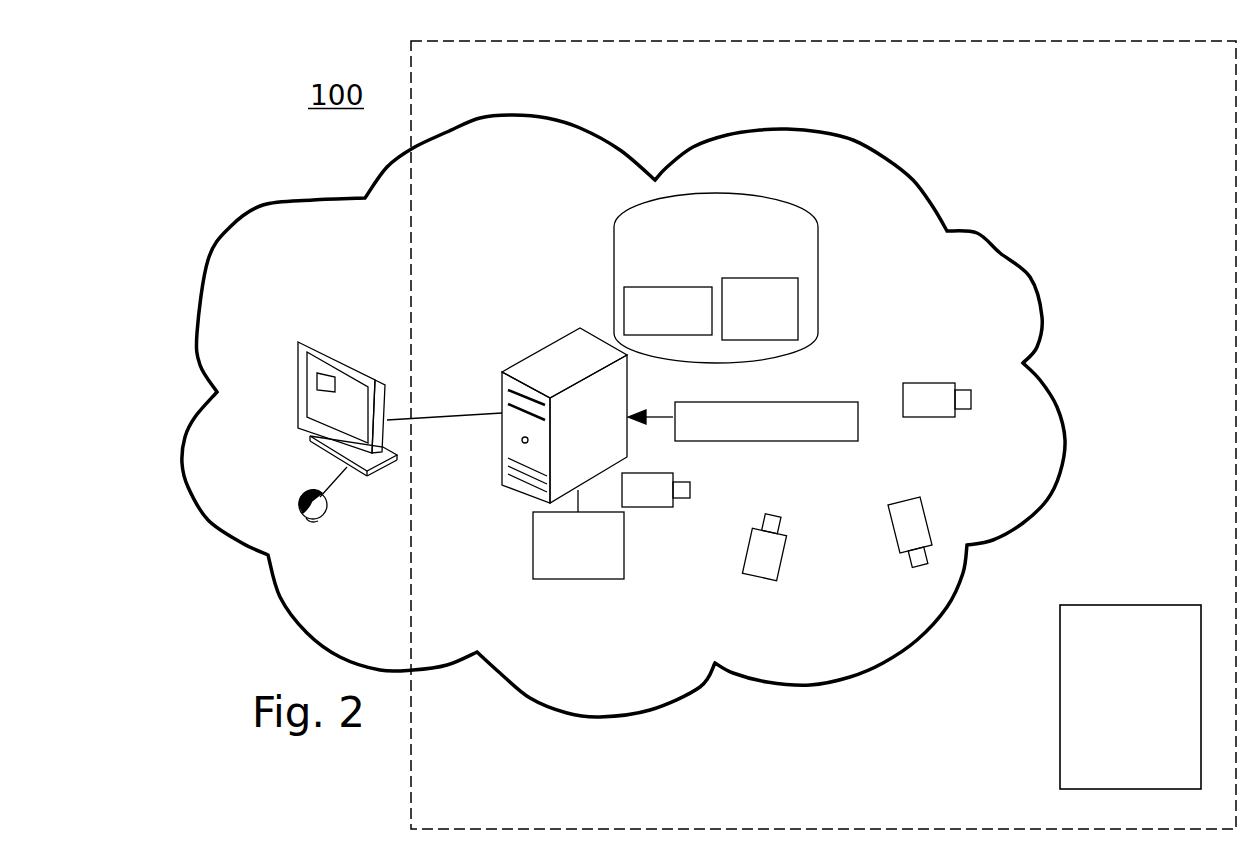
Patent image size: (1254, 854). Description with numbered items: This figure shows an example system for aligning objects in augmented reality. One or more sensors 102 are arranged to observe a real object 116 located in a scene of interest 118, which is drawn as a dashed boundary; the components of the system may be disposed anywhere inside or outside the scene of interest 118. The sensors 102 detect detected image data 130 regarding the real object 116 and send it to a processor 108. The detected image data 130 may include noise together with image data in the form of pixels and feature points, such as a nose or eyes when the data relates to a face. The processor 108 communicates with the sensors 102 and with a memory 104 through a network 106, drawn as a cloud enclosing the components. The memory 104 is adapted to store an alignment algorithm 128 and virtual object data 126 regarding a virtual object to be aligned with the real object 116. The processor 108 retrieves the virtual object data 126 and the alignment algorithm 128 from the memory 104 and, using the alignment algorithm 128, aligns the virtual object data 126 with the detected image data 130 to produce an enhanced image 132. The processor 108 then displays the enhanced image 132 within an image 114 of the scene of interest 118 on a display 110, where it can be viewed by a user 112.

The sensors 102 is at (927, 420).
The memory 104 is at (817, 320).
The network 106 is at (1000, 263).
The processor 108 is at (642, 392).
The display 110 is at (298, 392).
The user 112 is at (298, 498).
The image 114 is at (316, 373).
The real object 116 is at (1052, 668).
The scene of interest 118 is at (1027, 42).
The virtual object data 126 is at (763, 275).
The alignment algorithm 128 is at (688, 285).
The detected image data 130 is at (795, 402).
The enhanced image 132 is at (583, 580).